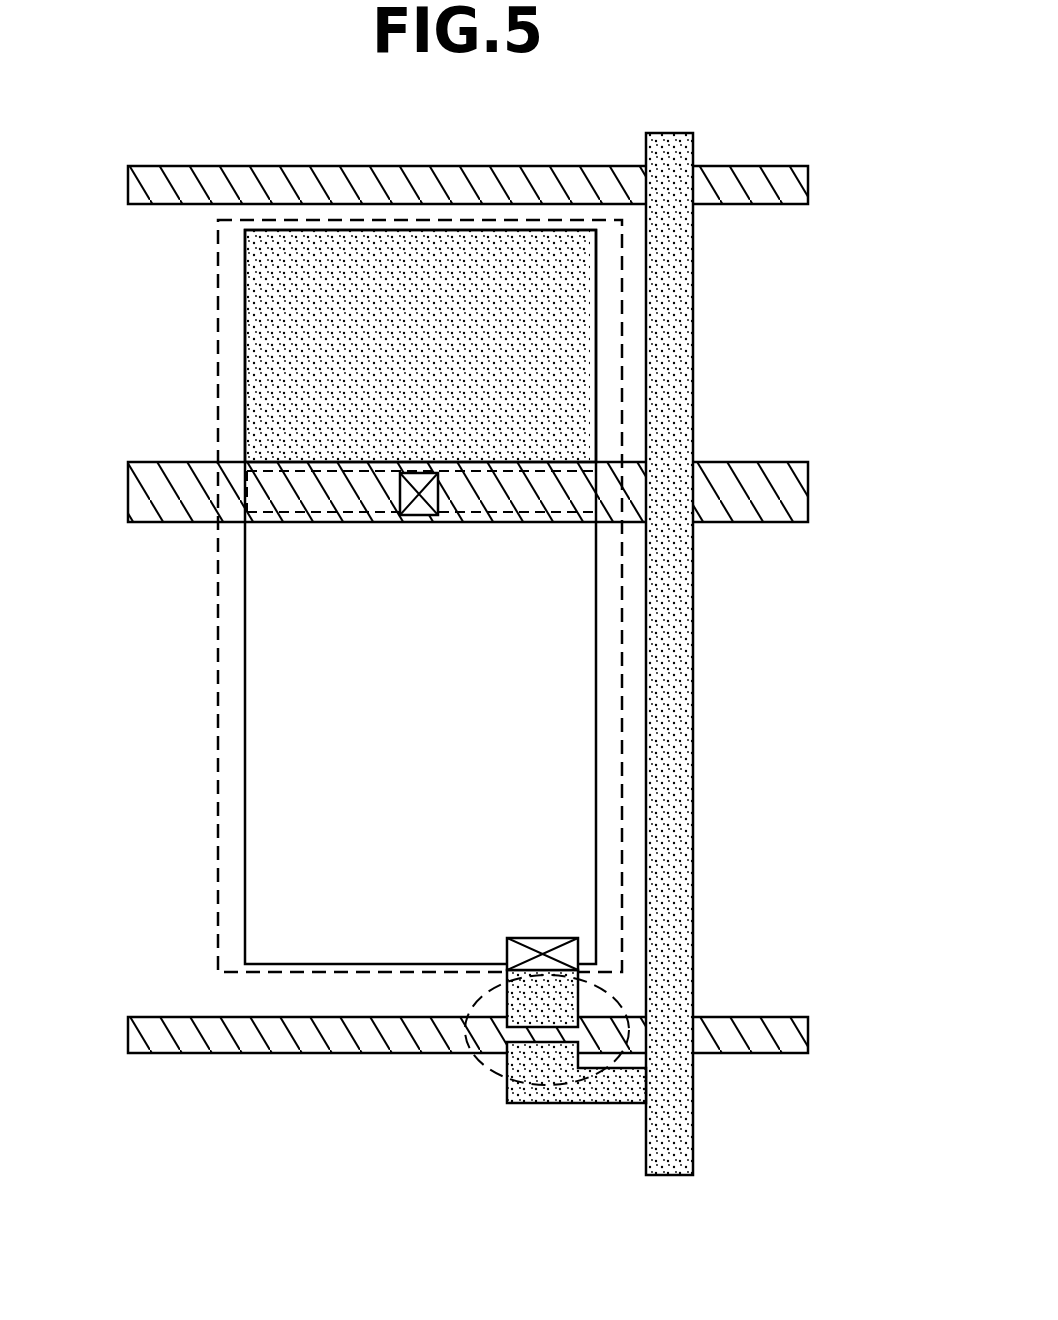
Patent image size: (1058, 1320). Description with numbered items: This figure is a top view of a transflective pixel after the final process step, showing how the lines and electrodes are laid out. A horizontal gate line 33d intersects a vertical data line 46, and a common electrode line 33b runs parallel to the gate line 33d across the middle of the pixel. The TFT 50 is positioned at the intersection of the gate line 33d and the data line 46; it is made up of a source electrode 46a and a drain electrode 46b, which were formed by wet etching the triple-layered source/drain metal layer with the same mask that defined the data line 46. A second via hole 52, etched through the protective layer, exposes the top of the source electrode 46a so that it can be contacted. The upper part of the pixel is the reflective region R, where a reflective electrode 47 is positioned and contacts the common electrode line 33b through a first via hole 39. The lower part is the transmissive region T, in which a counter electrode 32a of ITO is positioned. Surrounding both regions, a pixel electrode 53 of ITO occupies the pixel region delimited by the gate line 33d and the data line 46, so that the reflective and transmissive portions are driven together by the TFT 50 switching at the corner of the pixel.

The gate line 33d is at (808, 183).
The common electrode line 33b is at (808, 493).
The data line 46 is at (693, 341).
The reflective electrode 47 is at (265, 413).
The first via hole 39 is at (428, 474).
The counter electrode 32a is at (265, 623).
The pixel electrode 53 is at (215, 890).
The second via hole 52 is at (543, 940).
The source electrode 46a is at (497, 1000).
The drain electrode 46b is at (530, 1070).
The TFT 50 is at (555, 1085).
The thin film transistor TFT is at (476, 1086).
The reflective region R is at (185, 303).
The transmissive region T is at (185, 753).